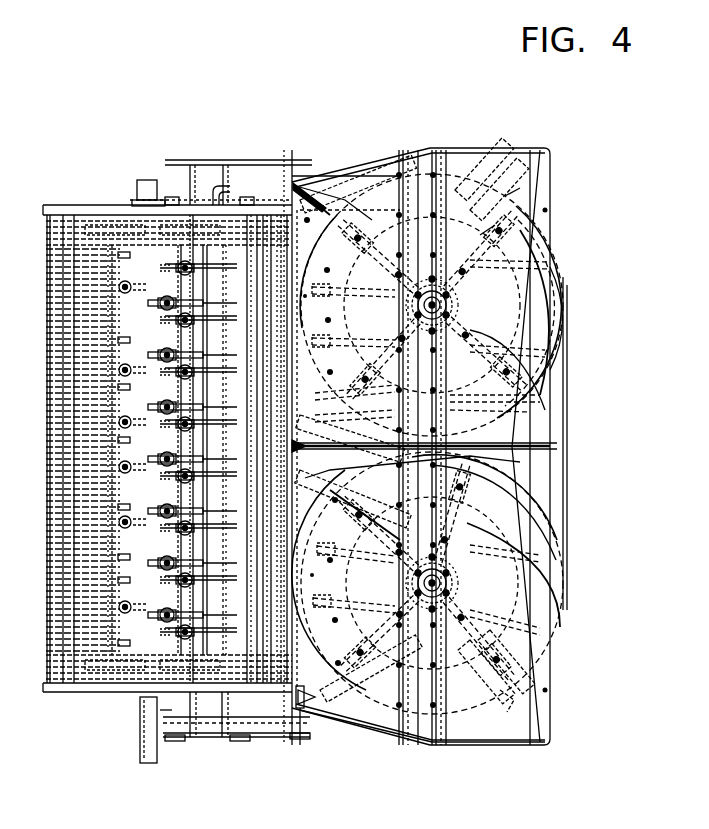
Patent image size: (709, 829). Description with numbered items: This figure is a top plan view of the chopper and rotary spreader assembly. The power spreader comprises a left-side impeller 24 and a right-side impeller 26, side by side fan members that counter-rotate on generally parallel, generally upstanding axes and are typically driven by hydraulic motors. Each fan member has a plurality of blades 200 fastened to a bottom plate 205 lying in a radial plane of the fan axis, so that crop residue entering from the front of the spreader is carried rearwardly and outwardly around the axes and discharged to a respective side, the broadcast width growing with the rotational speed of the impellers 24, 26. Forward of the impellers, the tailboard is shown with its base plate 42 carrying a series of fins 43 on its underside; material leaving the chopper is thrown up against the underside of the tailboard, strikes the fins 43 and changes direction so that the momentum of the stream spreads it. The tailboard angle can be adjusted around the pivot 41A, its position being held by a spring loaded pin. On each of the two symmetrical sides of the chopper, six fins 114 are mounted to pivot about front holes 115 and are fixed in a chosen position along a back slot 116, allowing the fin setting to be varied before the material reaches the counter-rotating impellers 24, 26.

The left-side impeller 24 is at (580, 452).
The right-side impeller 26 is at (572, 342).
The base plate 42 is at (518, 730).
The fins 43 is at (445, 315).
The fins 114 is at (520, 697).
The front holes 115 is at (337, 273).
The back slot 116 is at (455, 213).
The blades 200 is at (455, 370).
The bottom plate 205 is at (545, 632).
The pivot 41A is at (303, 697).